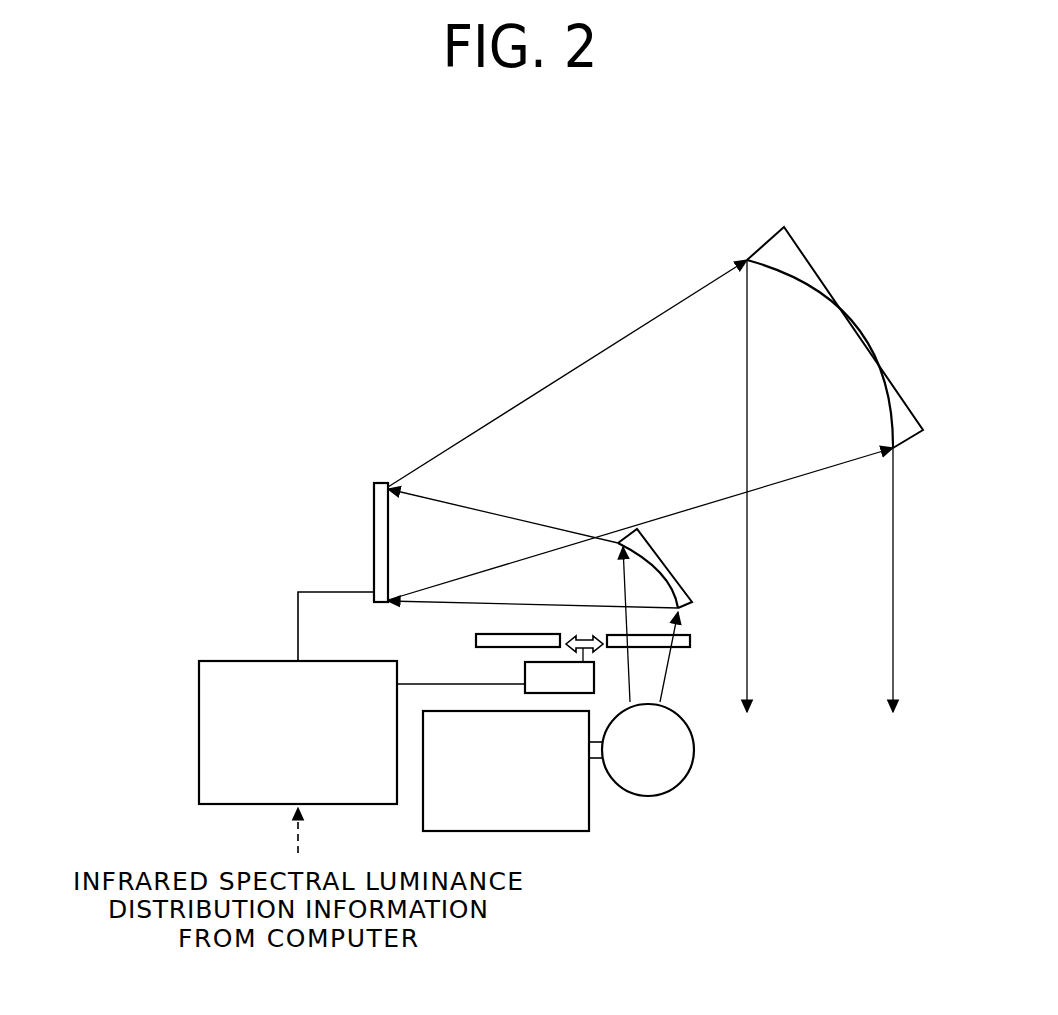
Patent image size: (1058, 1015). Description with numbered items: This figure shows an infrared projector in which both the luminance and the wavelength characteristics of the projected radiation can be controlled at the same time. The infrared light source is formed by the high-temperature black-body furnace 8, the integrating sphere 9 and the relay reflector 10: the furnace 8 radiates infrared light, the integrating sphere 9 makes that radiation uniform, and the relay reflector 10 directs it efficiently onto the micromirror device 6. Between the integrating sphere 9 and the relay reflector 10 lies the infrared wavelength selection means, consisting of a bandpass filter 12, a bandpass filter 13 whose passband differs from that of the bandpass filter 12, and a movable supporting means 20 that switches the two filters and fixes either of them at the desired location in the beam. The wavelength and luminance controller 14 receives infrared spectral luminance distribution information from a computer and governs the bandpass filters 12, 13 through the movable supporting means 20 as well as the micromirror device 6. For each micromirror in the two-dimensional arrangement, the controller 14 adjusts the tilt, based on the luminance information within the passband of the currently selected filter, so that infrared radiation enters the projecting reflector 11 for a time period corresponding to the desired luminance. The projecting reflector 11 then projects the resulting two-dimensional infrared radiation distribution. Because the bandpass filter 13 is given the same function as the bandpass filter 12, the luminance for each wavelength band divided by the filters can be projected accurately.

The micromirror device 6 is at (385, 480).
The high-temperature black-body furnace 8 is at (559, 831).
The integrating sphere 9 is at (666, 797).
The relay reflector 10 is at (665, 560).
The projecting reflector 11 is at (857, 330).
The bandpass filter 12 is at (688, 632).
The bandpass filter 13 is at (476, 642).
The wavelength and luminance controller 14 is at (212, 659).
The movable supporting means 20 is at (524, 673).